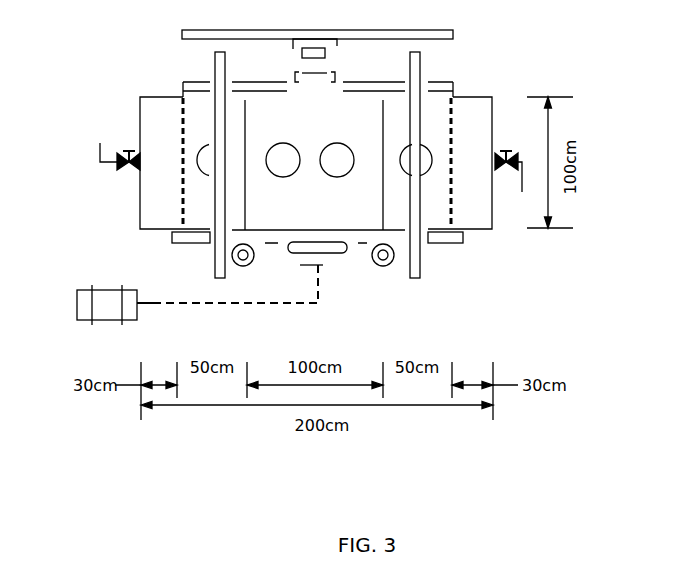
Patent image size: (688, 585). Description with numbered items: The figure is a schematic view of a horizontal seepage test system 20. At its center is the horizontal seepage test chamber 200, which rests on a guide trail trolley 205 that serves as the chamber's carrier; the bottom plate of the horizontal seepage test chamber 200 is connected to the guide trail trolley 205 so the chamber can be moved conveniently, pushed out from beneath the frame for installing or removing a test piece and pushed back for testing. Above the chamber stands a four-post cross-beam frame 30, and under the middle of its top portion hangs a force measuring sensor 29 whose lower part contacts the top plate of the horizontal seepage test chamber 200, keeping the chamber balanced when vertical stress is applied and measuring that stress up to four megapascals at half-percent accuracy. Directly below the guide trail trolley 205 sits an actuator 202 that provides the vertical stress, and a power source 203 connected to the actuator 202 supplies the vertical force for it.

The horizontal seepage test system 20 is at (231, 302).
The force measuring sensor 29 is at (336, 47).
The four-post cross-beam frame 30 is at (421, 55).
The horizontal seepage test chamber 200 is at (313, 137).
The actuator 202 is at (318, 267).
The power source 203 is at (107, 319).
The guide trail trolley 205 is at (457, 252).